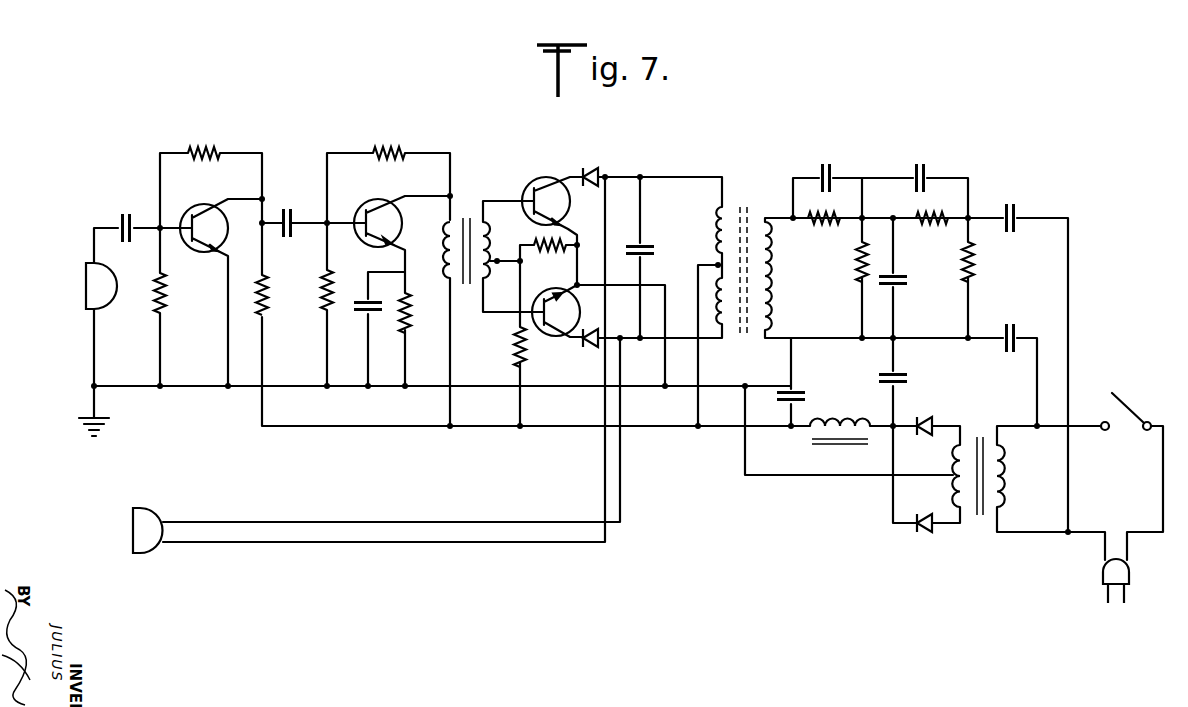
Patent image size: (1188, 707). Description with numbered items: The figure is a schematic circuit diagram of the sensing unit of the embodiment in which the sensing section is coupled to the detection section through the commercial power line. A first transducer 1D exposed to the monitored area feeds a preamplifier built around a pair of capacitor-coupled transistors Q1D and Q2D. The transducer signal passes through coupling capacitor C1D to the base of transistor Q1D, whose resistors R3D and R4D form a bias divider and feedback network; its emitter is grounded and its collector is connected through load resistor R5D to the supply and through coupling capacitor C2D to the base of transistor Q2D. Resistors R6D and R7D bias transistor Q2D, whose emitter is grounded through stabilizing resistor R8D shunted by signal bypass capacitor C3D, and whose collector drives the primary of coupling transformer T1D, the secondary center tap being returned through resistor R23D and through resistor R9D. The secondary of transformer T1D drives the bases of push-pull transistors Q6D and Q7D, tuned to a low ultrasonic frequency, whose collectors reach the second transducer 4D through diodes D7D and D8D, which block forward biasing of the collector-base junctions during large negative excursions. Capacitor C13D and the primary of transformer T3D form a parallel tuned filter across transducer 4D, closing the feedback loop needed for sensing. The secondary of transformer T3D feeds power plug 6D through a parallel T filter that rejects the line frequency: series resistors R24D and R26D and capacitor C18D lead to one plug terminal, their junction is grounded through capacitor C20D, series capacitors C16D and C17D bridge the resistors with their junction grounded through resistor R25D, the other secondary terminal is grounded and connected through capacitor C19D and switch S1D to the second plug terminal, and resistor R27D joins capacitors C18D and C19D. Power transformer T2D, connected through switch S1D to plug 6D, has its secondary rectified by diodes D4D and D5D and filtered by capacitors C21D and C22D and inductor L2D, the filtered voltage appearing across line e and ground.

The first transducer 1D is at (86, 288).
The second transducer 4D is at (138, 530).
The power plug 6D is at (1128, 578).
The coupling capacitor C1D is at (131, 212).
The coupling capacitor C2D is at (294, 204).
The signal bypass capacitor C3D is at (358, 313).
The filter capacitor C13D is at (643, 245).
The capacitor C16D is at (828, 163).
The capacitor C17D is at (925, 176).
The capacitor C18D is at (1016, 208).
The capacitor C19D is at (1008, 348).
The capacitor C20D is at (902, 282).
The filter capacitor C21D is at (797, 392).
The filter capacitor C22D is at (902, 377).
The transistor Q1D is at (206, 205).
The transistor Q2D is at (370, 201).
The transistor Q6D is at (547, 177).
The transistor Q7D is at (556, 340).
The resistor R3D is at (166, 302).
The resistor R4D is at (227, 137).
The load resistor R5D is at (268, 288).
The resistor R6D is at (322, 302).
The resistor R7D is at (396, 152).
The stabilizing resistor R8D is at (412, 328).
The resistor R9D is at (516, 344).
The resistor R23D is at (530, 240).
The resistor R24D is at (838, 224).
The resistor R25D is at (857, 250).
The resistor R26D is at (950, 224).
The resistor R27D is at (973, 262).
The diode D4D is at (926, 417).
The diode D5D is at (930, 533).
The diode D7D is at (589, 170).
The diode D8D is at (586, 349).
The coupling transformer T1D is at (466, 242).
The power supply transformer T2D is at (978, 458).
The transformer T3D is at (744, 254).
The inductor L2D is at (839, 444).
The switch S1D is at (1122, 396).
The line e is at (668, 430).